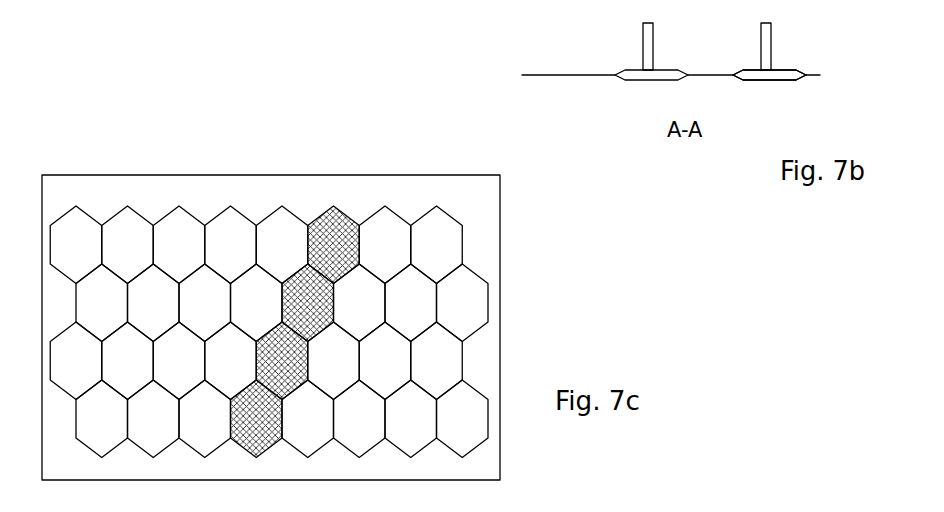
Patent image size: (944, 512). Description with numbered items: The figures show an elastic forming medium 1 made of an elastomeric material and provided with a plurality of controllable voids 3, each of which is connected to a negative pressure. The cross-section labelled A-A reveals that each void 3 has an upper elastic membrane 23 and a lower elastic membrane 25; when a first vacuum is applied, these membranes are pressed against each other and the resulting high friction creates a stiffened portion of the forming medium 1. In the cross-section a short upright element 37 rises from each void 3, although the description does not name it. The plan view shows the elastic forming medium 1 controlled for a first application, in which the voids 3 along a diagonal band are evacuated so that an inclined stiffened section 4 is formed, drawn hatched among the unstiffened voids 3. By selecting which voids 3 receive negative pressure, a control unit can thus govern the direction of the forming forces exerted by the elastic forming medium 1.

In FIG. 7C, the elastic forming medium 1 is at (292, 175).
In FIG. 7B, the controllable void 3 is at (670, 58).
In FIG. 7C, the controllable void 3 is at (227, 230).
In FIG. 7C, the inclined stiffened section 4 is at (342, 190).
In FIG. 7B, the upper elastic membrane 23 is at (800, 68).
In FIG. 7B, the lower elastic membrane 25 is at (797, 79).
In FIG. 7B, the pin 37 is at (643, 37).